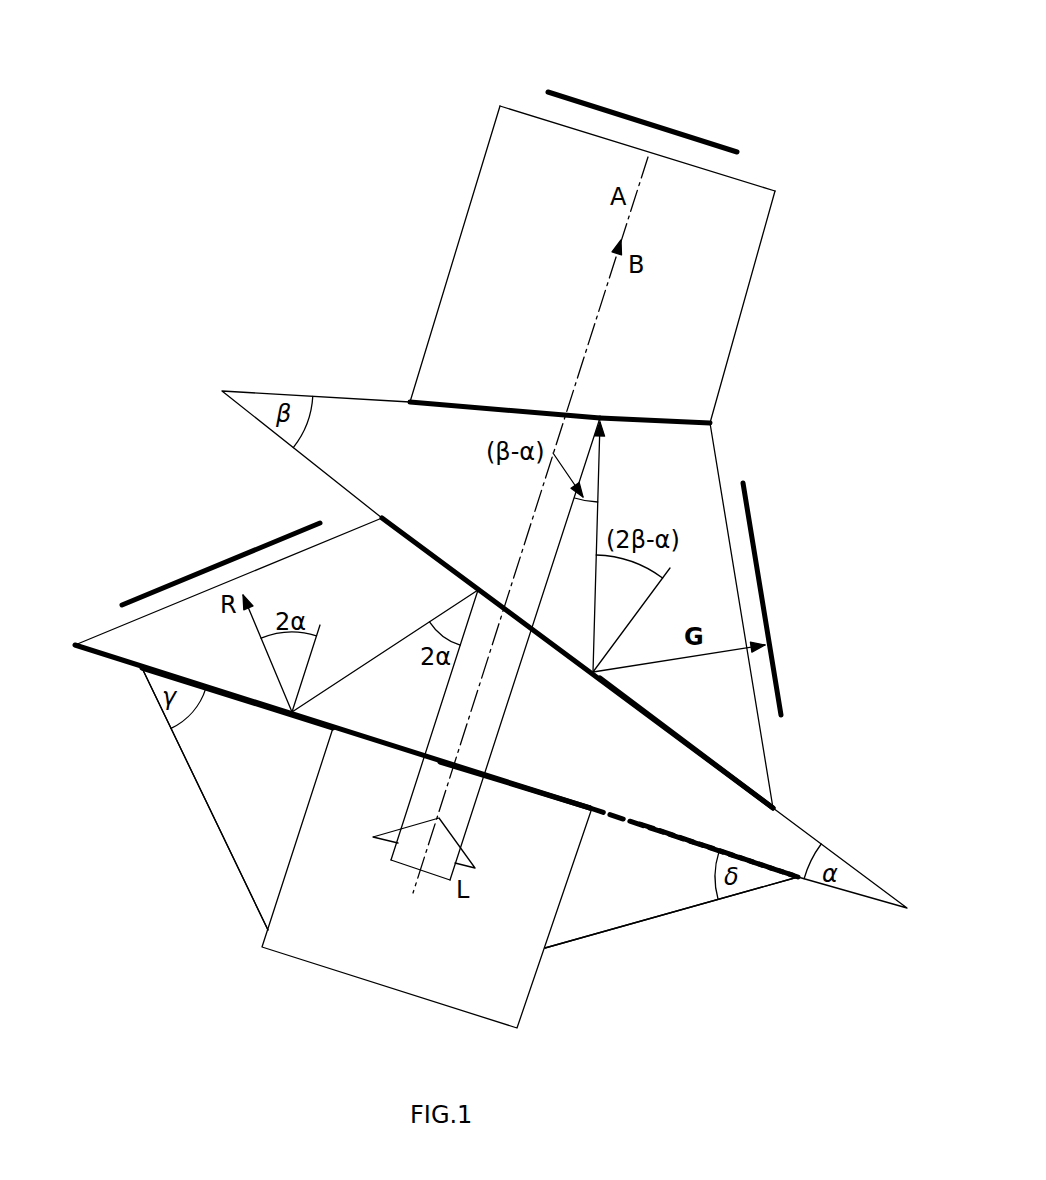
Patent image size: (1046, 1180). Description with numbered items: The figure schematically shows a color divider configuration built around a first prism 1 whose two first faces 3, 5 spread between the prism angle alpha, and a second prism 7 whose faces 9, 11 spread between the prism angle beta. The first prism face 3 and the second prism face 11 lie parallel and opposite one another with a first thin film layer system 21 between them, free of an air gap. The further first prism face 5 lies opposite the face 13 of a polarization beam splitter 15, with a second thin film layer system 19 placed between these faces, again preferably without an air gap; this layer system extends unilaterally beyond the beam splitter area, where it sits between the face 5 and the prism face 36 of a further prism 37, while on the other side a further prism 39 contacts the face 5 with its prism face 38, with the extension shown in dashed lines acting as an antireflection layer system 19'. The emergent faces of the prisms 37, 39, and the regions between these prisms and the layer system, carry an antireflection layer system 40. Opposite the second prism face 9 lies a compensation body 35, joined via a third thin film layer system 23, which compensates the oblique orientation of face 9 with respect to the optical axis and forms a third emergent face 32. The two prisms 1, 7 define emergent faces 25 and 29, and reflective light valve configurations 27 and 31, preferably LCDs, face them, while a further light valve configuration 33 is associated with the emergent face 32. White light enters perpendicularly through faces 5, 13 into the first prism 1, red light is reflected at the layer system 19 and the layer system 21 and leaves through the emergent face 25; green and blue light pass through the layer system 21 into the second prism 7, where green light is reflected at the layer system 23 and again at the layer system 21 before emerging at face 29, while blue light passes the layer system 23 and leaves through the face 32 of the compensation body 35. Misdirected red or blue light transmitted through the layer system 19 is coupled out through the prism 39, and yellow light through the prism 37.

The first prism 1 is at (550, 735).
The first prism face 3 is at (595, 683).
The first prism face 5 is at (563, 797).
The second prism 7 is at (509, 507).
The second prism face 9 is at (437, 408).
The second prism face 11 is at (640, 706).
The face of polarization beam splitter 13 is at (523, 790).
The polarization beam splitter 15 is at (359, 910).
The second thin film layer system 19 is at (428, 725).
The thin film layer system acting as antireflection layer 19' is at (694, 825).
The first thin film layer system 21 is at (427, 548).
The third thin film layer system 23 is at (648, 414).
The emergent face 25 is at (110, 628).
The light valve configuration 27 is at (193, 575).
The emergent face 29 is at (770, 771).
The light valve configuration 31 is at (758, 567).
The third emergent face 32 is at (533, 114).
The light valve configuration 33 is at (695, 136).
The compensation body 35 is at (688, 313).
The prism face of further prism 36 is at (252, 708).
The further prism 37 is at (268, 810).
The prism face of further prism 38 is at (673, 838).
The further prism 39 is at (636, 888).
The antireflection layer system 40 is at (232, 860).